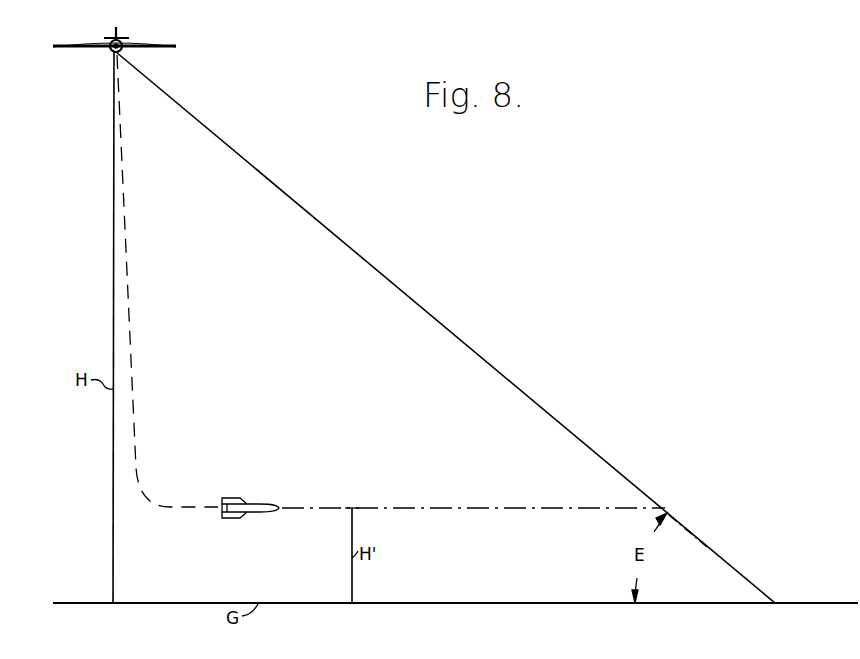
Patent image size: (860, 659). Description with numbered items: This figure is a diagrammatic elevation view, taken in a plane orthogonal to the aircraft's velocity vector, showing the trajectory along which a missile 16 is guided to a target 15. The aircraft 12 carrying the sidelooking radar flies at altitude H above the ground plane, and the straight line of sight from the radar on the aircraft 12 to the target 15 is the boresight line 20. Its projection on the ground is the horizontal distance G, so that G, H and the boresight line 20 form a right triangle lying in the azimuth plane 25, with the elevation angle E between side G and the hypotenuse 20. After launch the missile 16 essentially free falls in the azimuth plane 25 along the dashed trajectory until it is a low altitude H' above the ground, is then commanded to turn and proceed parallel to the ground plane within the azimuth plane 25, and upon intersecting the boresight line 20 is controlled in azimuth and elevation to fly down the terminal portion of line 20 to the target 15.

The aircraft 12 is at (168, 45).
The boresight line 20 is at (474, 353).
The azimuth plane 25 is at (252, 380).
The missile 16 is at (256, 497).
The target 15 is at (775, 604).